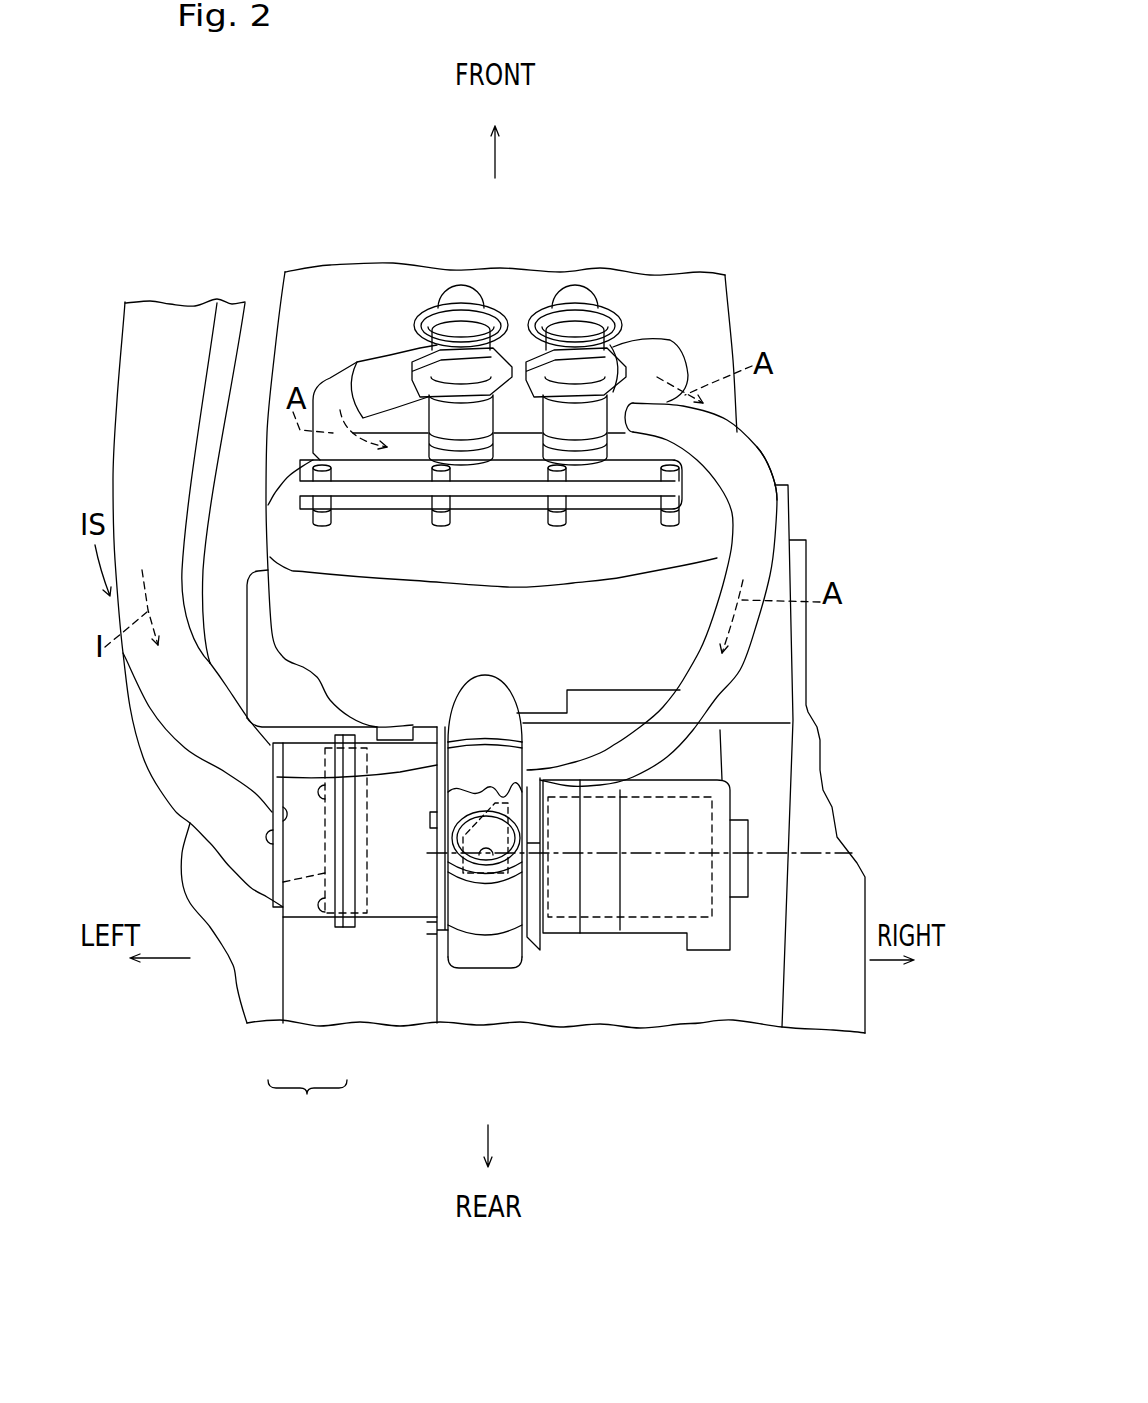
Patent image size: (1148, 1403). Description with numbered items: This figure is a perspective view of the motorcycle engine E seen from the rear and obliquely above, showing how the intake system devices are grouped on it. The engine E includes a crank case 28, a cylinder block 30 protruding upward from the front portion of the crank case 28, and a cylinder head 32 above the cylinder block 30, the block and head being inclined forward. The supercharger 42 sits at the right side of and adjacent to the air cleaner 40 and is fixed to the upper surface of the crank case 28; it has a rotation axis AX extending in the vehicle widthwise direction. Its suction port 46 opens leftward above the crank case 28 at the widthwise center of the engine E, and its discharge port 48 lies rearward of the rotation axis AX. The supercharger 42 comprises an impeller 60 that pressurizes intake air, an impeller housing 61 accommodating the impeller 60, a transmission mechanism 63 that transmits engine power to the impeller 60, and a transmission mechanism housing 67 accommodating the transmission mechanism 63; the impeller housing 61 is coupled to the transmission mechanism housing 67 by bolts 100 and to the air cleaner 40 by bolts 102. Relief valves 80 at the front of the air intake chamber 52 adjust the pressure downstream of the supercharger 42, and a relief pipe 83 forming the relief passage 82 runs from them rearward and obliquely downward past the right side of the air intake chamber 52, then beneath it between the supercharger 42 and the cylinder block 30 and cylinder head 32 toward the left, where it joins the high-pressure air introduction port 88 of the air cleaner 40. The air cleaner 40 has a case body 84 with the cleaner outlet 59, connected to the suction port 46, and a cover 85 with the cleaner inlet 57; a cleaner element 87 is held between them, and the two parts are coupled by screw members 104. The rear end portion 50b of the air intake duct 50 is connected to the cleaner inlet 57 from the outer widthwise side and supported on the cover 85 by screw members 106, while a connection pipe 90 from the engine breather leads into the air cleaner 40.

The air intake duct 50 is at (182, 323).
The cylinder head 32 is at (328, 298).
The relief valves 80 is at (560, 291).
The relief passage 82 is at (724, 453).
The relief pipe 83 is at (772, 465).
The air intake chamber 52 is at (300, 538).
The cylinder block 30 is at (257, 593).
The connection pipe 90 is at (300, 713).
The high-pressure air introduction port 88 is at (277, 777).
The cleaner element 87 is at (283, 882).
The screw members 104 is at (283, 910).
The cleaner outlet 59 is at (278, 807).
The rear end portion of the air intake duct 50b is at (267, 837).
The screw members 106 is at (272, 870).
The cleaner inlet 57 is at (272, 866).
The cover 85 is at (307, 915).
The case body 84 is at (345, 930).
The air cleaner 40 is at (307, 1103).
The bolts 102 is at (412, 855).
The suction port 46 is at (432, 930).
The bolts 100 is at (438, 1027).
The supercharger 42 is at (492, 990).
The impeller housing 61 is at (463, 962).
The discharge port 48 is at (492, 852).
The impeller 60 is at (500, 878).
The transmission mechanism housing 67 is at (643, 923).
The transmission mechanism 63 is at (668, 913).
The crank case 28 is at (736, 1010).
The rotation axis AX is at (807, 852).
The engine E is at (245, 1040).